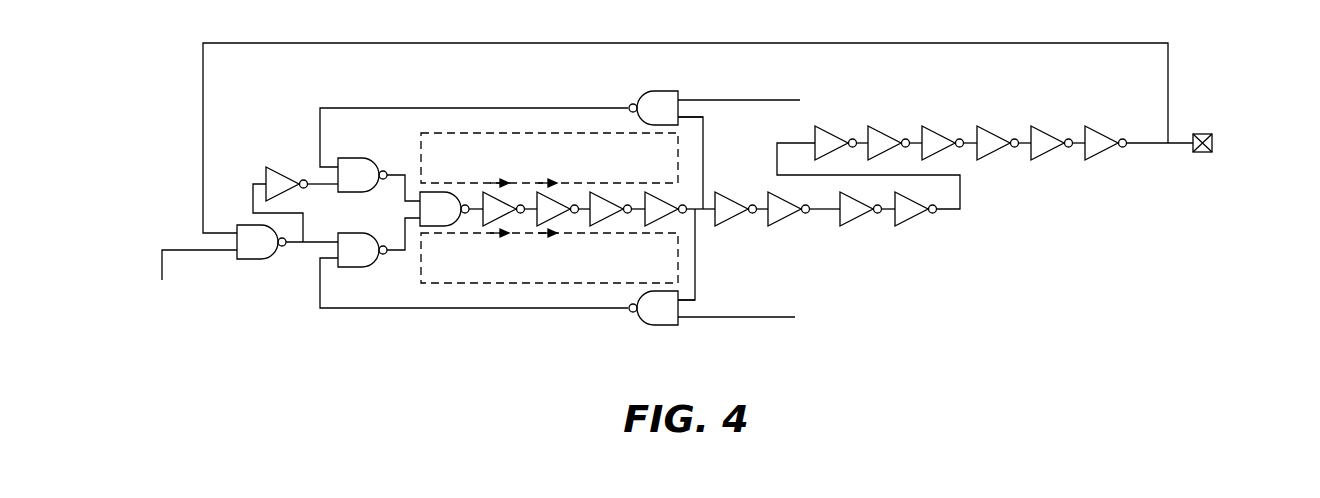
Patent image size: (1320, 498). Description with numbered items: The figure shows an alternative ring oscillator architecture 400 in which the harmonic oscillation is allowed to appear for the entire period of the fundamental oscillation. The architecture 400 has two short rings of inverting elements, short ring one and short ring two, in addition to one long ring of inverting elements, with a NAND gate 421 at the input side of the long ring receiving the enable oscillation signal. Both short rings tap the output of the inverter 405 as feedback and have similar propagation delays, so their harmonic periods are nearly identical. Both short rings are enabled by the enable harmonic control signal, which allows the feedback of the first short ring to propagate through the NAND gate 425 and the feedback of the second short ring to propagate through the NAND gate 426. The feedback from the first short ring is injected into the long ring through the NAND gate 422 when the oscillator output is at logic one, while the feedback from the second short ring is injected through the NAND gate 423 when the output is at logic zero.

The ring oscillator architecture 400 is at (688, 201).
The inverter 405 is at (668, 222).
The NAND gate 421 is at (250, 260).
The NAND gate 422 is at (364, 158).
The NAND gate 423 is at (367, 267).
The NAND gate 425 is at (662, 91).
The NAND gate 426 is at (663, 326).